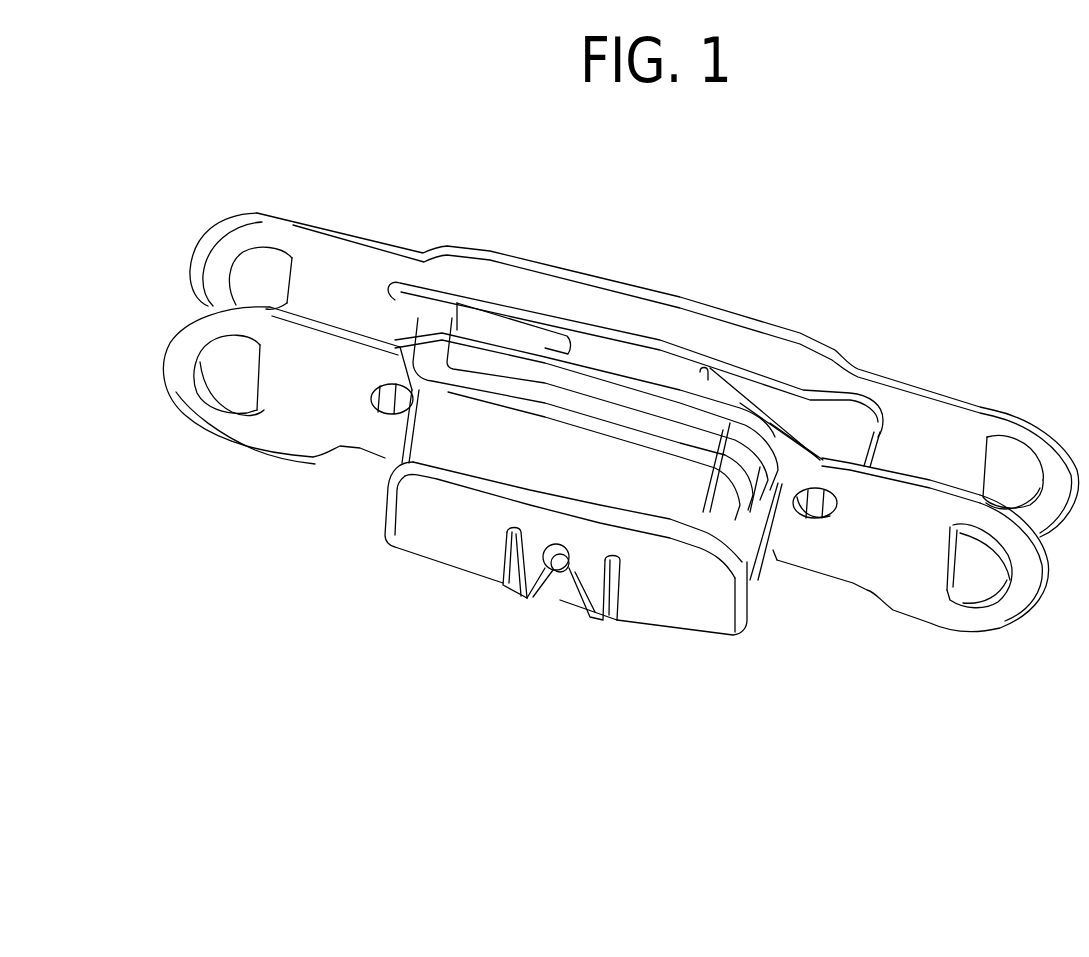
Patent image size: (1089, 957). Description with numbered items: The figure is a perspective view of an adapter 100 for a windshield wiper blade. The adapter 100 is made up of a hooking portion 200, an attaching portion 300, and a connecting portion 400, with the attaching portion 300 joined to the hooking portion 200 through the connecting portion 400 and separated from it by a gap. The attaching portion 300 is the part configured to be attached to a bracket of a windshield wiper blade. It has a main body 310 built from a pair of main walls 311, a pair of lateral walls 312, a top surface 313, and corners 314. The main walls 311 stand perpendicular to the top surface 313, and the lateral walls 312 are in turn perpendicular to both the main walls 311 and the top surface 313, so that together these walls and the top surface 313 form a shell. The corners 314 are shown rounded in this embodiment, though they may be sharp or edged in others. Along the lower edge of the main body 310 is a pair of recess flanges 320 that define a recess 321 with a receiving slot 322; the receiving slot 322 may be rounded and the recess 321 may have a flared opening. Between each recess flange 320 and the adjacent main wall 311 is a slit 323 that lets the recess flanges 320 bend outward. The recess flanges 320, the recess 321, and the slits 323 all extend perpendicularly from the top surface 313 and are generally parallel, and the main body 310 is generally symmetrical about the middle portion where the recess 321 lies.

The adapter 100 is at (1055, 313).
The hooking portion 200 is at (737, 302).
The attaching portion 300 is at (579, 447).
The main body 310 is at (557, 593).
The main walls 311 is at (650, 600).
The lateral walls 312 is at (758, 578).
The top surface 313 is at (665, 497).
The corners 314 is at (390, 480).
The recess flanges 320 is at (504, 633).
The recess 321 is at (550, 588).
The receiving slot 322 is at (573, 573).
The slits 323 is at (515, 588).
The connecting portion 400 is at (560, 373).